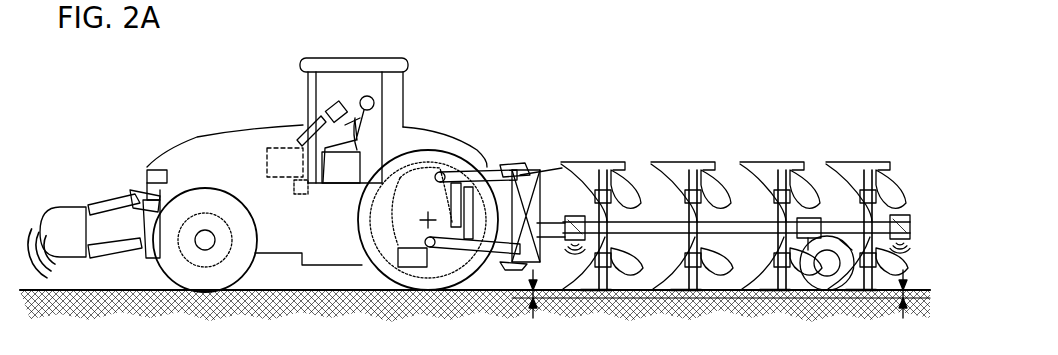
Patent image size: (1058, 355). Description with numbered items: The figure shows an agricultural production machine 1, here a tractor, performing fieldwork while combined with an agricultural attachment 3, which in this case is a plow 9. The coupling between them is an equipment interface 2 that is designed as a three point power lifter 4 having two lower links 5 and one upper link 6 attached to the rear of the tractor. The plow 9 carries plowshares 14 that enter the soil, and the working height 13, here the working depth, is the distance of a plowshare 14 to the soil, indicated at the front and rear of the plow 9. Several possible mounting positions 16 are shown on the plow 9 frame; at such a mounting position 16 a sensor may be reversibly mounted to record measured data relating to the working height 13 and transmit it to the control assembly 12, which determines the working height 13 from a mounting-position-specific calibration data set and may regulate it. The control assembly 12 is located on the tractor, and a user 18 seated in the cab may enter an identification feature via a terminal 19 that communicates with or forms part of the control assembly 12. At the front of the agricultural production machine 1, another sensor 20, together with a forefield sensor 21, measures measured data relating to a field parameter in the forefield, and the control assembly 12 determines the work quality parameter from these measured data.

The agricultural production machine 1 is at (190, 150).
The equipment interface 2 is at (495, 168).
The three point power lifter 4 is at (498, 160).
The agricultural attachment 3 is at (735, 176).
The plow 9 is at (740, 232).
The lower link 5 is at (506, 276).
The upper link 6 is at (507, 187).
The control assembly 12 is at (285, 163).
The working height 13 is at (533, 318).
The plowshare 14 is at (754, 120).
The mounting position 16 is at (575, 212).
The user 18 is at (372, 108).
The terminal 19 is at (327, 105).
The other sensor 20 is at (94, 211).
The forefield sensor 21 is at (70, 217).